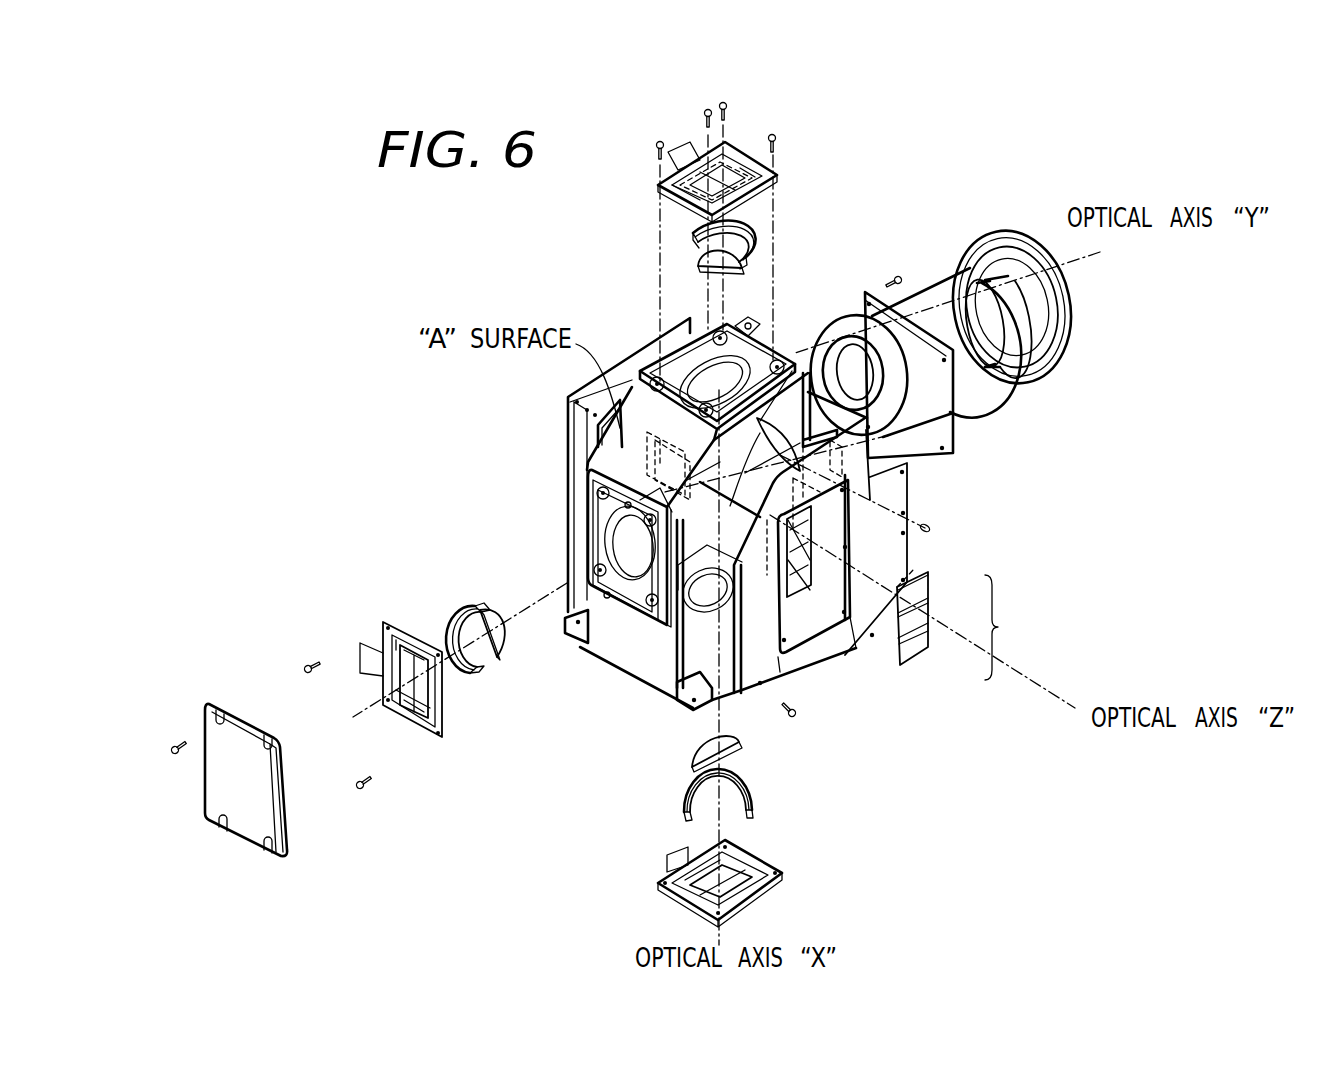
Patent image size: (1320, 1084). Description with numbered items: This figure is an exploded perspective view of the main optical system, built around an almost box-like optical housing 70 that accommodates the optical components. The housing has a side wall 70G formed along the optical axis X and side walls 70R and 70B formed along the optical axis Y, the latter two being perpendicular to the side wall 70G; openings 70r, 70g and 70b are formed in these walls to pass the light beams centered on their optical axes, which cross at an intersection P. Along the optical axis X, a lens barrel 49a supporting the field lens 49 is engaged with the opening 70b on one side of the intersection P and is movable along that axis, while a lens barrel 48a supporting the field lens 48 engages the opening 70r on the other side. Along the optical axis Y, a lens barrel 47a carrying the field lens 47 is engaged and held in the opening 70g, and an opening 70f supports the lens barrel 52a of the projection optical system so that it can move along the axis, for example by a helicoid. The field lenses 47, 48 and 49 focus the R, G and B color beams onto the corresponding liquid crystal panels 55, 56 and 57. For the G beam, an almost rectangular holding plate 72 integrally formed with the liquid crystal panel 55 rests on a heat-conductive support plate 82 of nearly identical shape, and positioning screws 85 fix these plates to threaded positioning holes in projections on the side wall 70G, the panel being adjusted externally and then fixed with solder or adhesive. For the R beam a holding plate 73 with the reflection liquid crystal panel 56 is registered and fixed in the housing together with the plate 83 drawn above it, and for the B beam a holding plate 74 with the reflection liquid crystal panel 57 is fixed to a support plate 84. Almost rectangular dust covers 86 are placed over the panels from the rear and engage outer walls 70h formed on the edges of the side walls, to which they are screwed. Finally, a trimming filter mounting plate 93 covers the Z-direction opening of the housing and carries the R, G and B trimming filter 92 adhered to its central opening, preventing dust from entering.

The field lens 47 is at (497, 635).
The lens barrel 47a is at (477, 658).
The field lens 48 is at (702, 268).
The lens barrel 48a is at (748, 242).
The field lens 49 is at (690, 753).
The lens barrel 49a is at (685, 782).
The lens barrel 52a is at (987, 380).
The liquid crystal panel 55 is at (418, 687).
The reflection liquid crystal panel 56 is at (684, 150).
The reflection liquid crystal panel 57 is at (740, 887).
The optical housing 70 is at (637, 650).
The side wall 70R is at (654, 378).
The side wall 70G is at (598, 570).
The side wall 70B is at (727, 637).
The opening 70r is at (702, 368).
The opening 70g is at (623, 528).
The opening 70b is at (703, 600).
The outer wall 70h is at (772, 398).
The opening 70f is at (804, 420).
The holding plate 72 is at (410, 723).
The holding plate 73 is at (672, 184).
The holding plate 74 is at (747, 853).
The support plate 82 is at (442, 727).
The fixing plate (red) 83 is at (745, 158).
The support plate 84 is at (773, 863).
The positioning screw 85 is at (729, 108).
The dust cover 86 is at (277, 803).
The trimming filter 92 is at (961, 624).
The trimming filter mounting plate 93 is at (855, 647).
The intersection P is at (690, 482).
The R color beam R is at (930, 585).
The G color beam G is at (930, 611).
The B color beam B is at (930, 650).